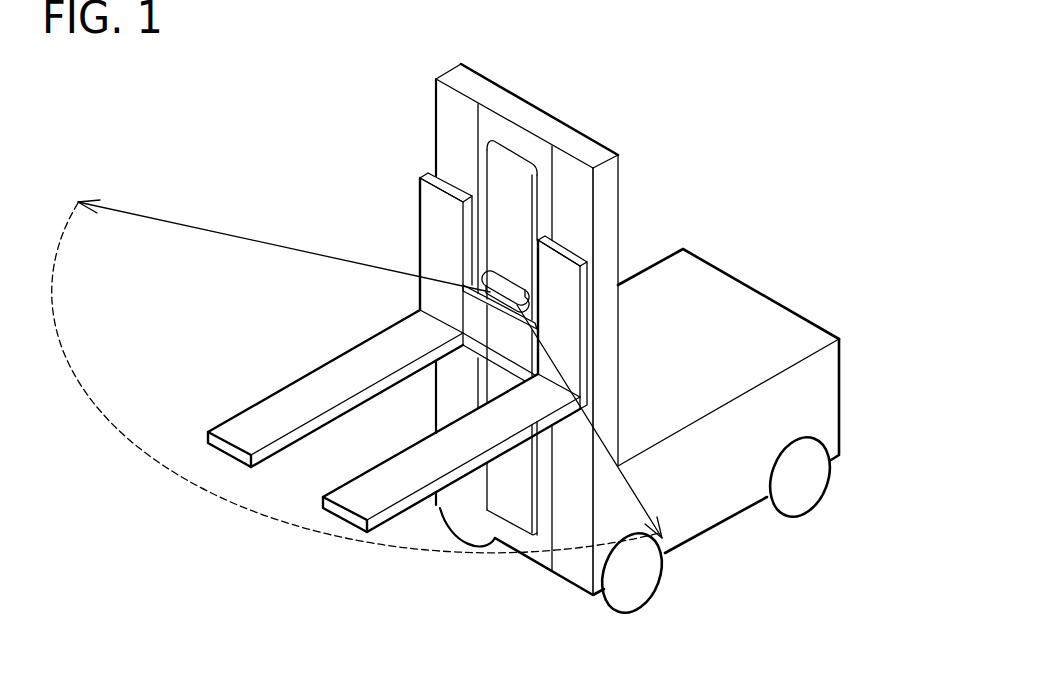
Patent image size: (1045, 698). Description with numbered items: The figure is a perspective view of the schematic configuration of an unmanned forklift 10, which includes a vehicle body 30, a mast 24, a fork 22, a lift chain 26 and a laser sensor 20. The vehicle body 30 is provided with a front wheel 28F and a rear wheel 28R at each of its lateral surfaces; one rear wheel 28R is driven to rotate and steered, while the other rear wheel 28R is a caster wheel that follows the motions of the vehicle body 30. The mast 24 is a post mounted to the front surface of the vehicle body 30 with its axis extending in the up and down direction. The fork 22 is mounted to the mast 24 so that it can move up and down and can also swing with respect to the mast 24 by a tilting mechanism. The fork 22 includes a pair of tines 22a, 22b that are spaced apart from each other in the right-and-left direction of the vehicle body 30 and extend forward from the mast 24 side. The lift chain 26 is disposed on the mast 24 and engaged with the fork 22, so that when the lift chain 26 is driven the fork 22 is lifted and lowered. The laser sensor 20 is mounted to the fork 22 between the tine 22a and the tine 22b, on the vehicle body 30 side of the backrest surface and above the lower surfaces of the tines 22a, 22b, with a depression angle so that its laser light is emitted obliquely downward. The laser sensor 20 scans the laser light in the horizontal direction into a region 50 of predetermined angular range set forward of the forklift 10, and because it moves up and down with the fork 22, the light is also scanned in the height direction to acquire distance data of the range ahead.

The forklift 10 is at (108, 102).
The laser sensor 20 is at (520, 303).
The fork 22 is at (313, 163).
The tine 22a is at (315, 392).
The tine 22b is at (413, 467).
The mast 24 is at (572, 565).
The lift chain 26 is at (489, 150).
The front wheel 28F is at (635, 583).
The rear wheel 28R is at (803, 488).
The vehicle body 30 is at (723, 302).
The region 50 is at (131, 447).